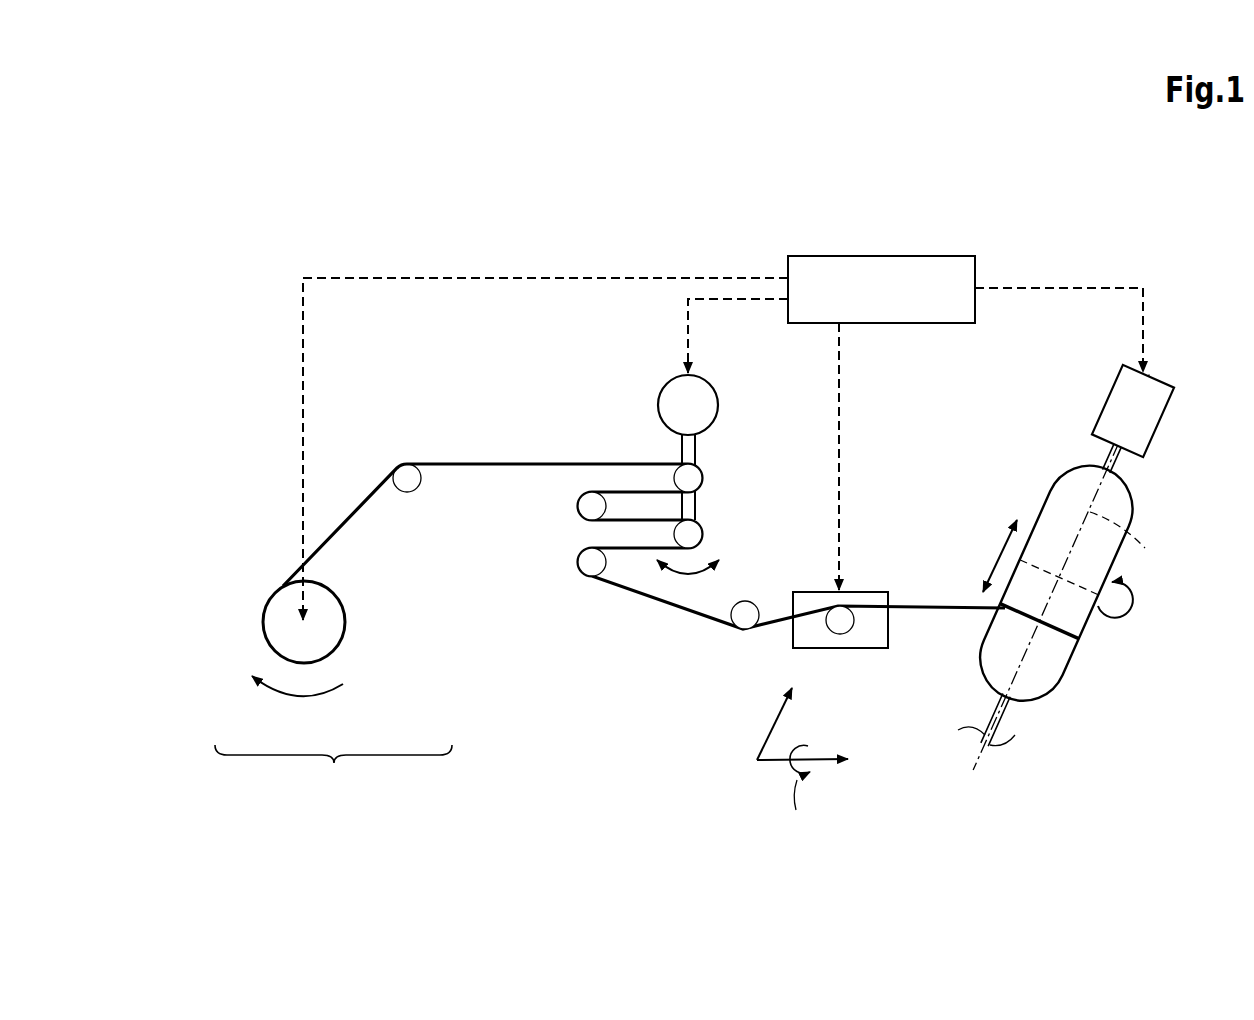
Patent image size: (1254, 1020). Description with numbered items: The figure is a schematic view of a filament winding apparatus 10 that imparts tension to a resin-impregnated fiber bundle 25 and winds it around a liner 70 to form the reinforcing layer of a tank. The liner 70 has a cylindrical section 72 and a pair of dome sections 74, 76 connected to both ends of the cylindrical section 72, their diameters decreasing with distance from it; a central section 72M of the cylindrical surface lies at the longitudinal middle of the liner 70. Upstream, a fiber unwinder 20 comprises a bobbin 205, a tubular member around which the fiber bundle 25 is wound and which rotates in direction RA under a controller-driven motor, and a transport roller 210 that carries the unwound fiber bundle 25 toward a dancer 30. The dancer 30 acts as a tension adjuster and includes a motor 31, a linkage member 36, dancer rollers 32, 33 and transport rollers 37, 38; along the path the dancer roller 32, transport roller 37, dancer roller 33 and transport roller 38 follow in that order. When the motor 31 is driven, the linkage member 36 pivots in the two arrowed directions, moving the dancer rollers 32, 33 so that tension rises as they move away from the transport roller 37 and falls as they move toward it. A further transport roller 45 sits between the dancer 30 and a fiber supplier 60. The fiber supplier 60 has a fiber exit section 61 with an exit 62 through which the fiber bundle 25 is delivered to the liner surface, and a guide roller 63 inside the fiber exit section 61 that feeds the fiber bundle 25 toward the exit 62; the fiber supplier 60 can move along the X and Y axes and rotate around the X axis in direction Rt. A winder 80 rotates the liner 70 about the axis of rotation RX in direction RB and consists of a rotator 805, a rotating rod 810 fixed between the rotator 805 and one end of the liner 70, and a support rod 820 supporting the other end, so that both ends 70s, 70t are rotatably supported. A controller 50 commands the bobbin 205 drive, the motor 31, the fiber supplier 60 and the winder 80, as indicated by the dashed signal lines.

The filament winding apparatus 10 is at (1025, 212).
The fiber unwinder 20 is at (322, 631).
The fiber bundle 25 is at (490, 462).
The dancer 30 is at (615, 392).
The motor 31 is at (712, 382).
The dancer roller 32 is at (690, 480).
The dancer roller 33 is at (690, 532).
The linkage member 36 is at (700, 447).
The transport roller 37 is at (582, 505).
The transport roller 38 is at (580, 562).
The transport roller 45 is at (742, 620).
The controller 50 is at (935, 256).
The fiber supplier 60 is at (870, 567).
The fiber exit section 61 is at (880, 592).
The exit 62 is at (889, 630).
The guide roller 63 is at (838, 628).
The liner 70 is at (1030, 490).
The end of liner 70s is at (1015, 700).
The end of liner 70t is at (1115, 475).
The cylindrical section 72 is at (1045, 520).
The central section 72M is at (1077, 590).
The dome section 74 is at (1075, 470).
The dome section 76 is at (985, 660).
The winder 80 is at (1078, 366).
The bobbin 205 is at (277, 607).
The transport roller 210 is at (407, 484).
The rotator 805 is at (1110, 400).
The rotating rod 810 is at (1113, 463).
The support rod 820 is at (1000, 742).